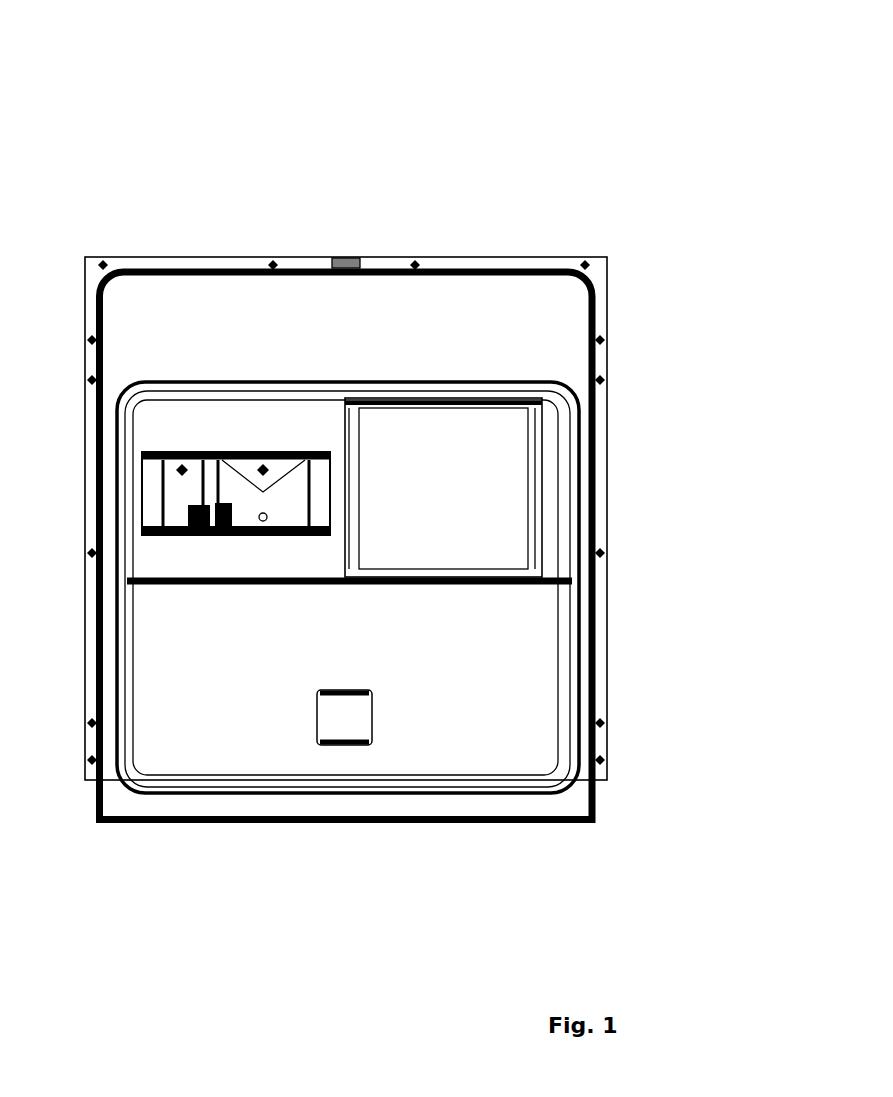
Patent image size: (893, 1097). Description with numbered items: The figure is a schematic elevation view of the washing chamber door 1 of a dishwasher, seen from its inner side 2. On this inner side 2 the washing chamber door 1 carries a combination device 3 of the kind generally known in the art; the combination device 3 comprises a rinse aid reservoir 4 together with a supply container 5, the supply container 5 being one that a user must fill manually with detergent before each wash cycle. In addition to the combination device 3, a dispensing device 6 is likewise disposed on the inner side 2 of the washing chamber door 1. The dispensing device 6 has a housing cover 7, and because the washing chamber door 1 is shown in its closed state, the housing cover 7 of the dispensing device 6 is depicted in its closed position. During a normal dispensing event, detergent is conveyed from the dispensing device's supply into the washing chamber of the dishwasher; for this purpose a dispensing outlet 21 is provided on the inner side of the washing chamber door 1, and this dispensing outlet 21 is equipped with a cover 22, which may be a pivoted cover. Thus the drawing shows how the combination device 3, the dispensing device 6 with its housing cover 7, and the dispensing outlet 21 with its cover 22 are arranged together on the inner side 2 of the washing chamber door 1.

The washing chamber door 1 is at (628, 170).
The inner side 2 is at (359, 286).
The combination device 3 is at (217, 430).
The rinse aid reservoir 4 is at (175, 490).
The supply container 5 is at (250, 503).
The dispensing device 6 is at (465, 480).
The housing cover 7 is at (448, 532).
The dispensing outlet 21 is at (335, 717).
The cover 22 is at (350, 717).